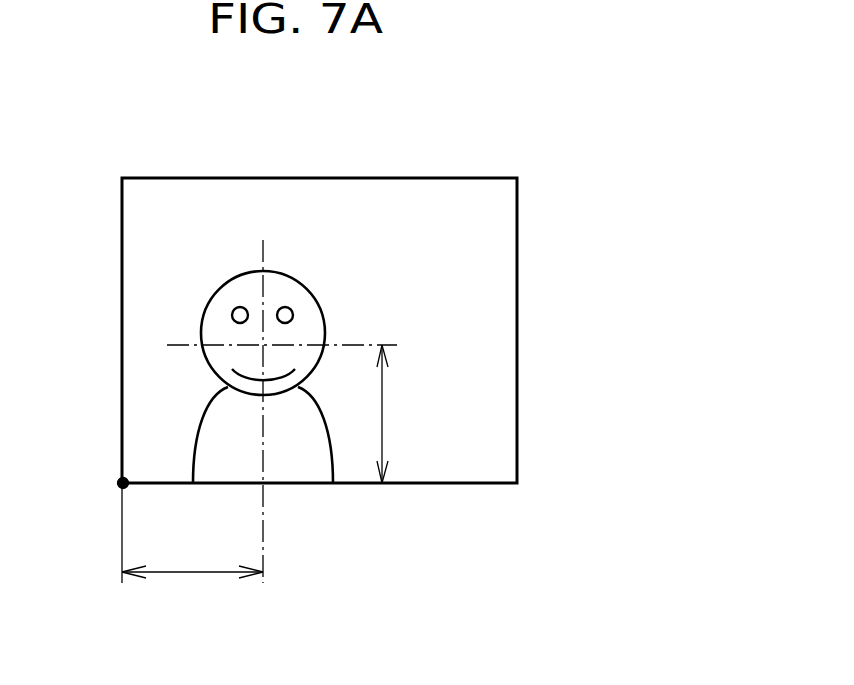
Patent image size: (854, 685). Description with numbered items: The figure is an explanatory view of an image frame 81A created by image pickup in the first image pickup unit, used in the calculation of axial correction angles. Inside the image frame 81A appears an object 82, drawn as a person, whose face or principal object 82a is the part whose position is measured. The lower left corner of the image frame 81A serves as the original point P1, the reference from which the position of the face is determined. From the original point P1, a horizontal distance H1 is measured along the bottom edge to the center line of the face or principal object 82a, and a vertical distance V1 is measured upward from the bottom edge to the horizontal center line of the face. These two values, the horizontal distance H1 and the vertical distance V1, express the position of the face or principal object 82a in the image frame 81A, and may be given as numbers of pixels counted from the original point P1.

The image frame 81A is at (415, 178).
The object 82 is at (318, 339).
The face or principal object 82a is at (245, 272).
The original point P1 is at (117, 483).
The vertical distance V1 is at (402, 414).
The horizontal distance H1 is at (192, 559).